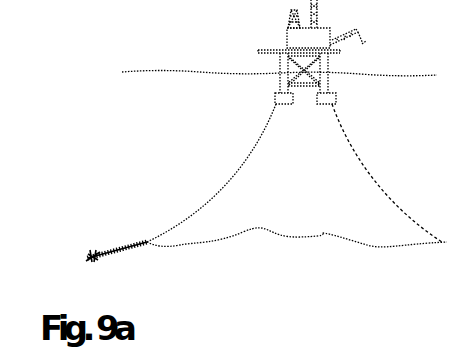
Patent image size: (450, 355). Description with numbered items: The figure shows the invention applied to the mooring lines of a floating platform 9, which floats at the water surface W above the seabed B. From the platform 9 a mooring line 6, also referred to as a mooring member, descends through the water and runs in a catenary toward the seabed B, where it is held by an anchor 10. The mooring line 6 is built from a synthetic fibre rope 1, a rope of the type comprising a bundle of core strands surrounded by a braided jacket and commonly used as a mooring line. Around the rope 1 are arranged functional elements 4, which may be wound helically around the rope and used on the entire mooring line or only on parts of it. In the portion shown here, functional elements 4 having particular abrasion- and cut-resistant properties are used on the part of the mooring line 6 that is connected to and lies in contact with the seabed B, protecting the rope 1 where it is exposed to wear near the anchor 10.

The floating production platform 9 is at (282, 52).
The synthetic fibre rope 1 is at (211, 166).
The mooring line 6 is at (390, 165).
The functional elements 4 is at (95, 218).
The anchor 10 is at (55, 237).
The seabed B is at (297, 212).
The water surface W is at (135, 134).